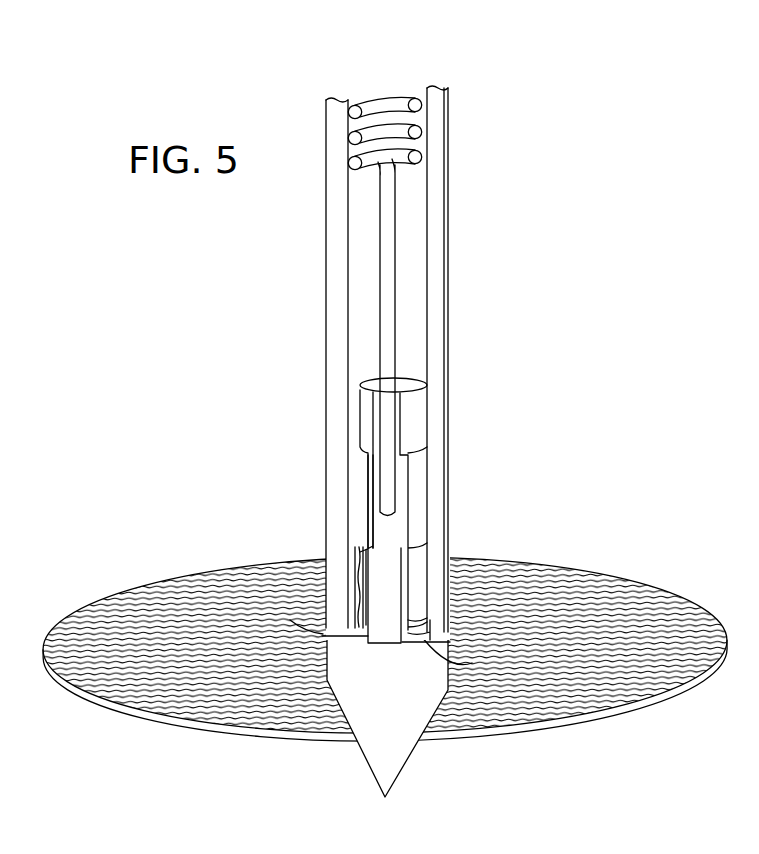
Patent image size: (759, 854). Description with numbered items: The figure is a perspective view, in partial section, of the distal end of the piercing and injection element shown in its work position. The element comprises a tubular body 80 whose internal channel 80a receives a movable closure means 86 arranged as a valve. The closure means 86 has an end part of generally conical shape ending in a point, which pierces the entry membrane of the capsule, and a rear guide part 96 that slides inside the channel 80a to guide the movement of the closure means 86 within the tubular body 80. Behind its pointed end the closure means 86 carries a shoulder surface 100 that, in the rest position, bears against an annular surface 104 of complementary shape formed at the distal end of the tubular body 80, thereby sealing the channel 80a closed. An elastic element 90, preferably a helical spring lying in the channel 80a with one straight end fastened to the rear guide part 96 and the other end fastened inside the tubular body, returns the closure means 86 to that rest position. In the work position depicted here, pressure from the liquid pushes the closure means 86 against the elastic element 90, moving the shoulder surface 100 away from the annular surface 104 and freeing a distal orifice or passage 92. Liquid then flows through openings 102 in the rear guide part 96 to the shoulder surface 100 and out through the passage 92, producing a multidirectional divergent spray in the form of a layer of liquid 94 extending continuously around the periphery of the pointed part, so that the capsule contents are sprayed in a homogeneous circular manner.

The tubular body 80 is at (326, 247).
The channel 80a is at (400, 288).
The movable closure means 86 is at (428, 751).
The elastic element 90 is at (410, 88).
The distal orifice or passage 92 is at (315, 632).
The layer of liquid 94 is at (110, 622).
The rear guide part 96 is at (350, 432).
The shoulder surface 100 is at (348, 624).
The openings 102 is at (360, 480).
The annular surface 104 is at (458, 644).